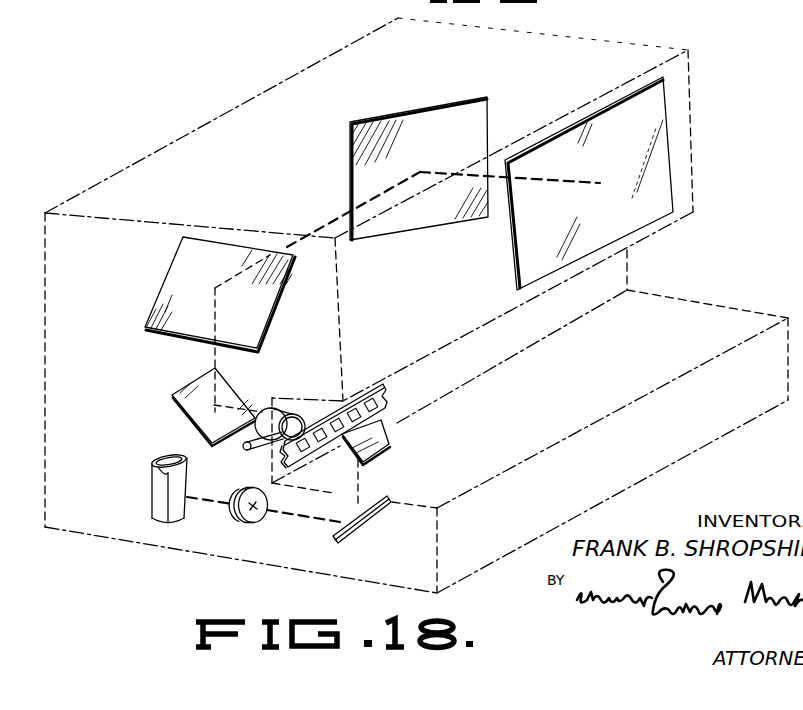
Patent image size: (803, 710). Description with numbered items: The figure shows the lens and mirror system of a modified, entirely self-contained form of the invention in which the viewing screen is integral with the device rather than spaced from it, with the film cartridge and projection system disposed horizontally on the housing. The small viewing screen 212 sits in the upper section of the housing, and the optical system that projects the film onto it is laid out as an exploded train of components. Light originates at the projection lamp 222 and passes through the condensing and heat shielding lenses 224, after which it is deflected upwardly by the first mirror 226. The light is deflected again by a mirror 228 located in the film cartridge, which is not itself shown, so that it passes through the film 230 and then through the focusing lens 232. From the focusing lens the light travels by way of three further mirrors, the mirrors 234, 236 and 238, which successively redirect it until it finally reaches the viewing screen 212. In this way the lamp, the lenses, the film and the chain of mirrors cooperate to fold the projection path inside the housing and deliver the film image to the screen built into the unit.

The viewing screen 212 is at (668, 167).
The projection lamp 222 is at (177, 520).
The condensing and heat shielding lenses 224 is at (248, 524).
The first mirror 226 is at (345, 541).
The mirror 228 is at (392, 432).
The film 230 is at (357, 402).
The focusing lens 232 is at (284, 413).
The mirror 234 is at (178, 411).
The mirror 236 is at (182, 267).
The mirror 238 is at (363, 159).